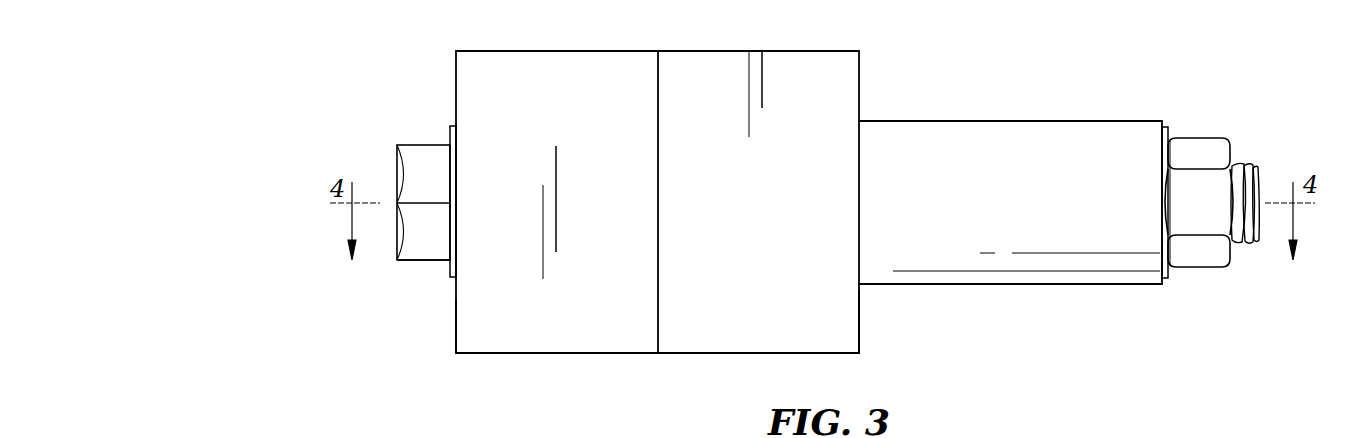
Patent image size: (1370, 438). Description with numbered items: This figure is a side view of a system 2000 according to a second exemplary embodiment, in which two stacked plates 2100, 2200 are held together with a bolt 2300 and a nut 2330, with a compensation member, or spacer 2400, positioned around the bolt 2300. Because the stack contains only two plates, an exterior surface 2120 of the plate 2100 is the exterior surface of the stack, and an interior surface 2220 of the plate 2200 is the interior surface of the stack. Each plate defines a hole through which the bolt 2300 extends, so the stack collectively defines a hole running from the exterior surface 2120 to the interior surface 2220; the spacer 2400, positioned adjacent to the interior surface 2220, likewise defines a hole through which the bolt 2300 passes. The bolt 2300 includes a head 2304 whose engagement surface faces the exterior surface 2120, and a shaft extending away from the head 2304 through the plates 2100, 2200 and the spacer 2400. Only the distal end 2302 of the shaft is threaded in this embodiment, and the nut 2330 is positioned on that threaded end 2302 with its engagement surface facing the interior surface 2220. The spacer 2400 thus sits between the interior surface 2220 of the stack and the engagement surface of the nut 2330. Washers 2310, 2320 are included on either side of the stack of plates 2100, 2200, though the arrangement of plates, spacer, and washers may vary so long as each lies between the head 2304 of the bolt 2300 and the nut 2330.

The system 2000 is at (309, 42).
The plate 2100 is at (556, 51).
The exterior surface 2120 is at (456, 327).
The plate 2200 is at (733, 51).
The interior surface 2220 is at (859, 311).
The bolt 2300 is at (420, 145).
The threaded distal end 2302 is at (1242, 165).
The head 2304 is at (416, 260).
The washer 2310 is at (452, 126).
The washer 2320 is at (1165, 127).
The nut 2330 is at (1185, 268).
The spacer 2400 is at (966, 121).